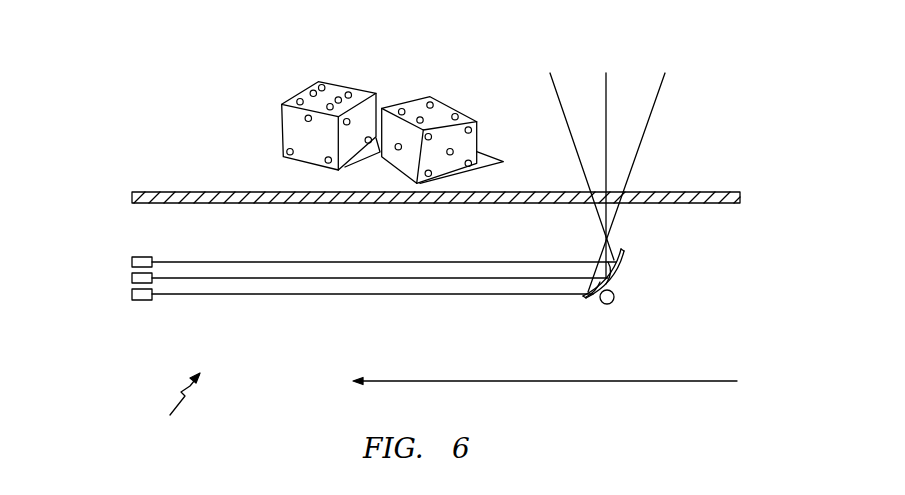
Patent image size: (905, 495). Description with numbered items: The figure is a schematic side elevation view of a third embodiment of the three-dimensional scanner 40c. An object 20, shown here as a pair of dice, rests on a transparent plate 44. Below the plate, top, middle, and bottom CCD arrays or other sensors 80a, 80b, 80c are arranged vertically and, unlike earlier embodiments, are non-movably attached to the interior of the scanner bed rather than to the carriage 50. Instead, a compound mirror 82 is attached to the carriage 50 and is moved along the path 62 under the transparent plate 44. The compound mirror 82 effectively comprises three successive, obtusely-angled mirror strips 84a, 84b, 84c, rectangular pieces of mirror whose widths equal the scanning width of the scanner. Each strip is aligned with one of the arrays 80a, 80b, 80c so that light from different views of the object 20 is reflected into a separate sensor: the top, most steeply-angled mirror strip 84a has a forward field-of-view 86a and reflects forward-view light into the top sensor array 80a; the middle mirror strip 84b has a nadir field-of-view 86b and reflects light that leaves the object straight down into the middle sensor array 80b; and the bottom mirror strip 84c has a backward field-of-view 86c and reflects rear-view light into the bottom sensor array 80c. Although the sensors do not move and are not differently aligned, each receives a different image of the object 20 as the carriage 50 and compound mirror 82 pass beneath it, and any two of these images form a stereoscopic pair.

The object 20 is at (283, 117).
The transparent plate 44 is at (178, 192).
The top sensor array 80a is at (133, 258).
The middle sensor array 80b is at (130, 278).
The bottom sensor array 80c is at (130, 295).
The compound mirror 82 is at (656, 298).
The top mirror strip 84a is at (623, 267).
The middle mirror strip 84b is at (612, 280).
The bottom mirror strip 84c is at (593, 298).
The carriage 50 is at (610, 304).
The forward field-of-view 86a is at (555, 77).
The nadir field-of-view 86b is at (610, 77).
The backward field-of-view 86c is at (662, 88).
The path of the carriage 62 is at (675, 383).
The 3-D scanner 40c is at (174, 404).